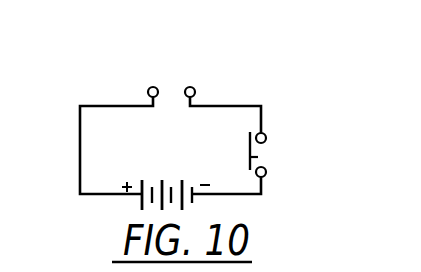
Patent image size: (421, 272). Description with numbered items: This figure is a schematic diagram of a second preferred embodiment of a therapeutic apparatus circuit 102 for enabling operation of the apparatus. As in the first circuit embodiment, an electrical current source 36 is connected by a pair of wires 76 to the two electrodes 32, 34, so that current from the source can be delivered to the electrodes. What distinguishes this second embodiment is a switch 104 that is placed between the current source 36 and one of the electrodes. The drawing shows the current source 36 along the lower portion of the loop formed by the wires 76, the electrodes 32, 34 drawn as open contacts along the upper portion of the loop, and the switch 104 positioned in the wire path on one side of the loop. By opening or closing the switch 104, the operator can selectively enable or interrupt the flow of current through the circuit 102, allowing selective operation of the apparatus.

The electrode 32 is at (151, 87).
The electrode 34 is at (194, 88).
The electrical current source 36 is at (173, 178).
The wires 76 is at (80, 142).
The therapeutic apparatus circuit 102 is at (348, 35).
The switch 104 is at (282, 149).